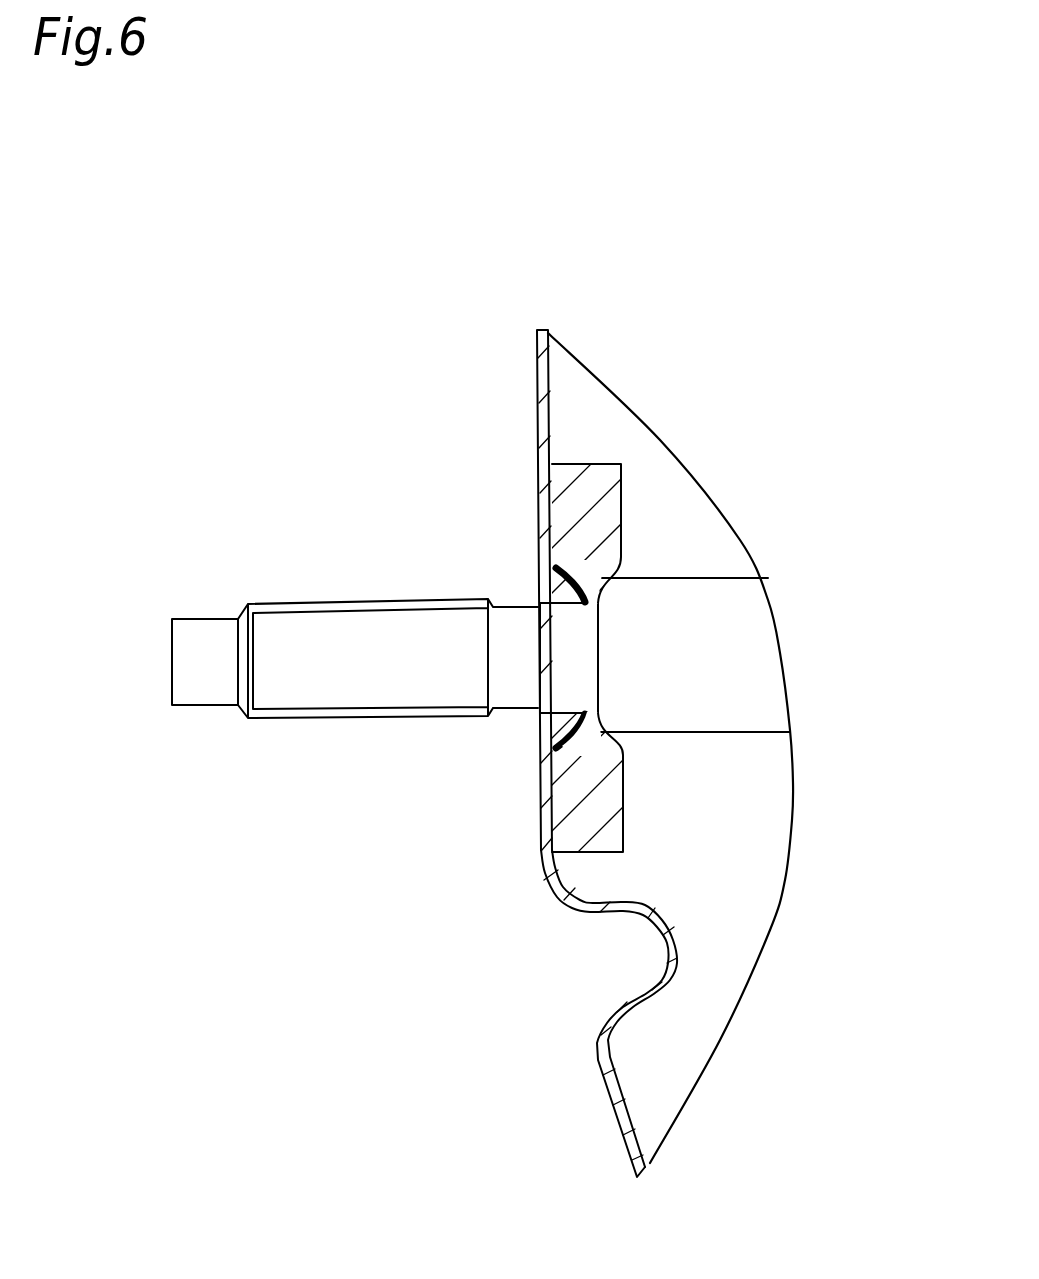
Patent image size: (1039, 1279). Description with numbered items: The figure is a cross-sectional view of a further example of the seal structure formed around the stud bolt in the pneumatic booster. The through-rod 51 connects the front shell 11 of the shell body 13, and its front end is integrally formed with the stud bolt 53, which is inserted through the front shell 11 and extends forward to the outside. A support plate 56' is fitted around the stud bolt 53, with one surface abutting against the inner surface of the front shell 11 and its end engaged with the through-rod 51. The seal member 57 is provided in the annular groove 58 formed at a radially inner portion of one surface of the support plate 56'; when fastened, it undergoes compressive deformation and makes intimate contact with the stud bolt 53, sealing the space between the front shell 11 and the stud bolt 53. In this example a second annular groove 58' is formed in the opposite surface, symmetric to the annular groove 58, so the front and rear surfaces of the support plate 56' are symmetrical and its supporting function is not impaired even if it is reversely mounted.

The front shell 11 is at (610, 1080).
The shell body 13 is at (522, 369).
The through-rod 51 is at (758, 658).
The stud bolt 53 is at (304, 628).
The support plate 56' is at (611, 445).
The seal member 57 is at (550, 578).
The annular groove 58 is at (503, 783).
The annular groove 58' is at (731, 770).